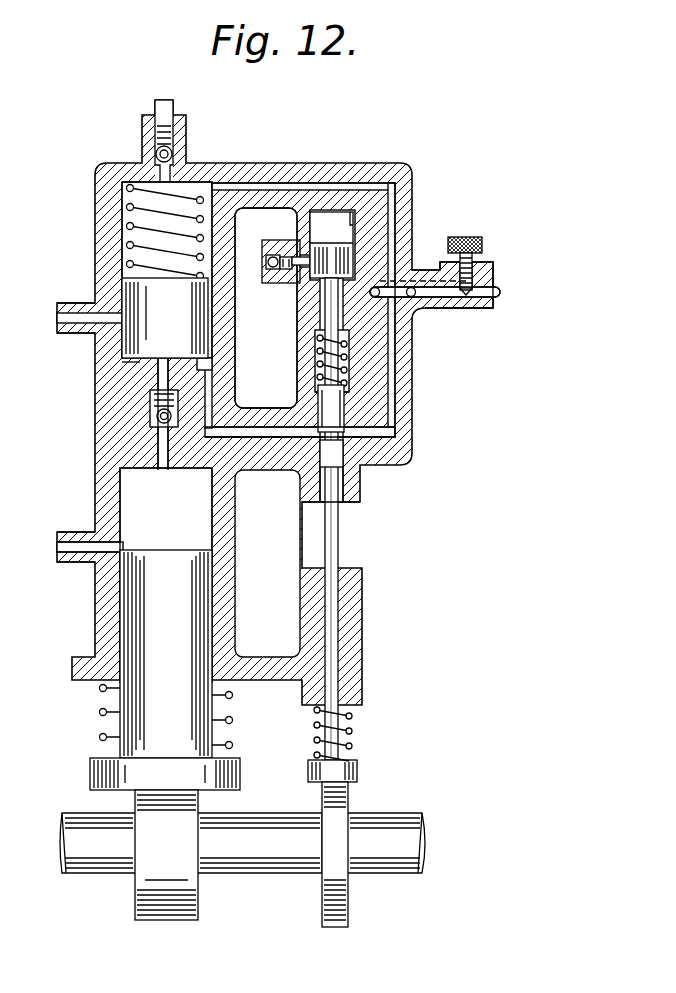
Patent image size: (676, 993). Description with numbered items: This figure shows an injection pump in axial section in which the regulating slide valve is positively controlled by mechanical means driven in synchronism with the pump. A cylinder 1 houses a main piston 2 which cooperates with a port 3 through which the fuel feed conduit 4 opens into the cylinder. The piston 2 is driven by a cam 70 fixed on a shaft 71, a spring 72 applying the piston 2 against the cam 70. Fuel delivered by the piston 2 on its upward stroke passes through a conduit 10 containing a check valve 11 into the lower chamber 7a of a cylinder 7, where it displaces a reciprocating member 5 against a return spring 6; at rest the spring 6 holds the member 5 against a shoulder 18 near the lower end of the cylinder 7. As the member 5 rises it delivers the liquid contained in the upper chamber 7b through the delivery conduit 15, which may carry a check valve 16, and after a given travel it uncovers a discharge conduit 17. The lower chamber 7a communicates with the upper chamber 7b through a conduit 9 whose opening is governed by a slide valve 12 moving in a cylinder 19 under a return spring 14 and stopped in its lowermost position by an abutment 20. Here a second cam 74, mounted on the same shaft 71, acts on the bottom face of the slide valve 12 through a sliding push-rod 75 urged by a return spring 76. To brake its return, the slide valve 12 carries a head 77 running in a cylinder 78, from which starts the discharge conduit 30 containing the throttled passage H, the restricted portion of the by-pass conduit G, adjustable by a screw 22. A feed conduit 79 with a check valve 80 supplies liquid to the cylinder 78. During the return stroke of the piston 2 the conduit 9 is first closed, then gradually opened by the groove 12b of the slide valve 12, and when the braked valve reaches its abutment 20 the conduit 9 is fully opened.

The cylinder 1 is at (212, 514).
The main piston 2 is at (156, 610).
The port 3 is at (118, 540).
The fuel feed conduit 4 is at (74, 548).
The reciprocating member 5 is at (156, 306).
The return spring 6 is at (128, 208).
The cylinder 7 is at (128, 243).
The lower chamber 7a is at (132, 363).
The upper chamber 7b is at (197, 190).
The conduit 9 is at (243, 185).
The conduit 10 is at (160, 444).
The check valve 11 is at (155, 416).
The slide valve 12 is at (334, 406).
The groove 12b is at (393, 434).
The return spring 14 is at (346, 348).
The delivery conduit 15 is at (156, 106).
The check valve 16 is at (158, 153).
The discharge conduit 17 is at (72, 312).
The shoulder 18 is at (207, 360).
The cylinder 19 is at (345, 372).
The abutment 20 is at (345, 470).
The screw 22 is at (474, 262).
The discharge conduit 30 is at (427, 290).
The cam 70 is at (152, 886).
The shaft 71 is at (246, 845).
The spring 72 is at (104, 738).
The cam 74 is at (340, 900).
The sliding push-rod 75 is at (340, 526).
The return spring 76 is at (351, 733).
The head 77 is at (338, 268).
The cylinder 78 is at (350, 212).
The feed conduit 79 is at (298, 258).
The check valve 80 is at (272, 257).
The by-pass conduit G is at (476, 306).
The throttled passage H is at (488, 290).